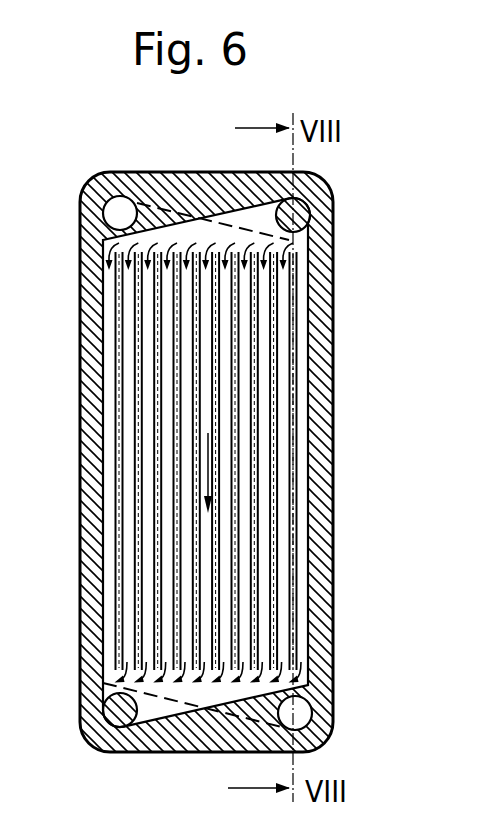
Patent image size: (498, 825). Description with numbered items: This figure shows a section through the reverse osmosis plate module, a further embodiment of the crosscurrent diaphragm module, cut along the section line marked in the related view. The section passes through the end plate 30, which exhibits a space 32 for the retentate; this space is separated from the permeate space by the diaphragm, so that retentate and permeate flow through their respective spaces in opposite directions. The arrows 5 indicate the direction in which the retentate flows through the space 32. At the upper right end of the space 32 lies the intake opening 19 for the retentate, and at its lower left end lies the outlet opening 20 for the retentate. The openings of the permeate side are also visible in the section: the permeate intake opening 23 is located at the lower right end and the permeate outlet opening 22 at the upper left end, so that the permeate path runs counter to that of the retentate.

The arrows 5 is at (208, 468).
The intake opening 19 is at (300, 218).
The outlet opening 20 is at (118, 712).
The permeate outlet opening 22 is at (102, 180).
The permeate intake opening 23 is at (303, 711).
The end plate 30 is at (322, 290).
The space 32 is at (283, 372).